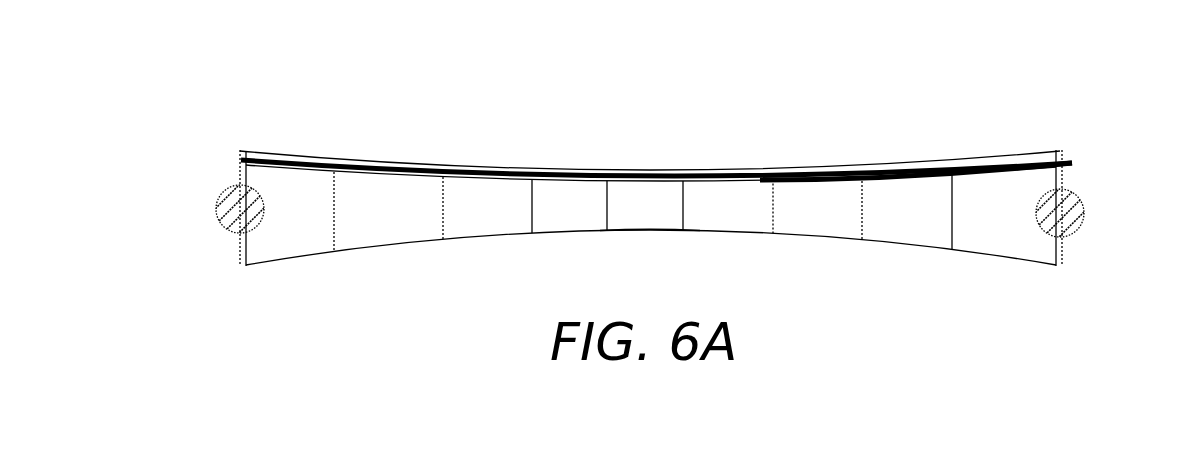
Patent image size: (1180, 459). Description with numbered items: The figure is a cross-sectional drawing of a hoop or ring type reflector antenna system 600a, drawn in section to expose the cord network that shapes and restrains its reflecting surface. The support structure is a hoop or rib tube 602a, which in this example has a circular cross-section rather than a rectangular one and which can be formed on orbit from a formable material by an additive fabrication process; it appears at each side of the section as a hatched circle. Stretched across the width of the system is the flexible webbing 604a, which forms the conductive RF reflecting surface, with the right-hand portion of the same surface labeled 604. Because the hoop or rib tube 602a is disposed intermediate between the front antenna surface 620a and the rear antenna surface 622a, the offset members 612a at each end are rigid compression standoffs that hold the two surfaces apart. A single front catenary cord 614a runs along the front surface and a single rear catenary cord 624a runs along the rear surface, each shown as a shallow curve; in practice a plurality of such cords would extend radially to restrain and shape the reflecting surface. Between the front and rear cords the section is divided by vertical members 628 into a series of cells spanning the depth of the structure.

The reflector antenna system 600a is at (148, 112).
The hoop or rib tube 602a is at (223, 226).
The skin panel 604 is at (998, 170).
The flexible webbing 604a is at (297, 168).
The offset member 612a is at (239, 178).
The front catenary cord 614a is at (406, 165).
The front antenna surface 620a is at (643, 153).
The rear antenna surface 622a is at (832, 250).
The rear catenary cord 624a is at (507, 234).
The stiffener 628 is at (335, 222).